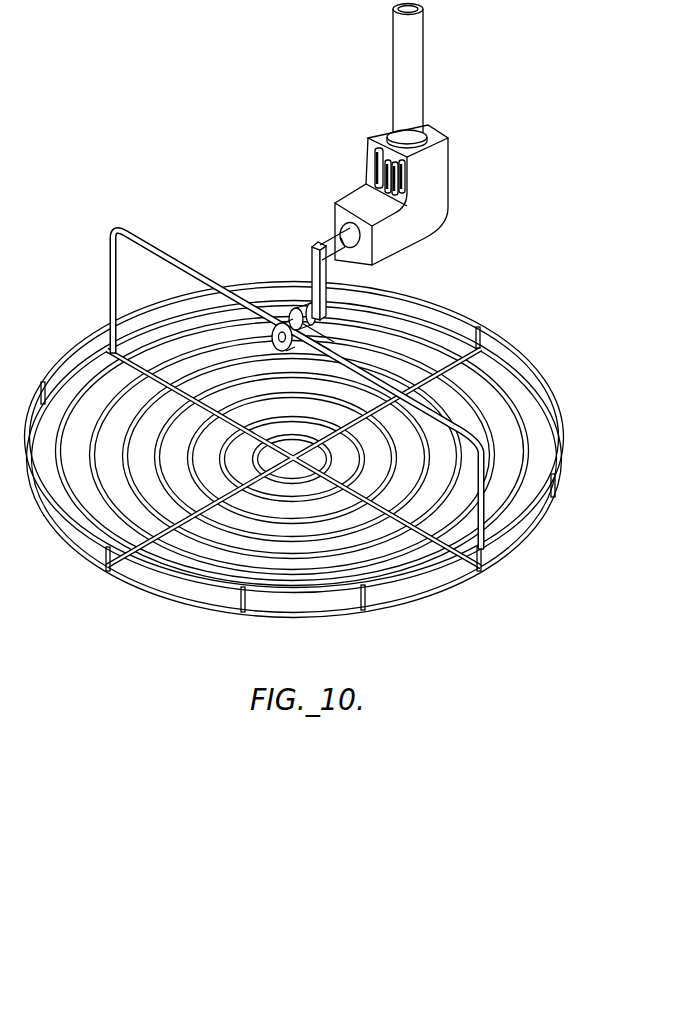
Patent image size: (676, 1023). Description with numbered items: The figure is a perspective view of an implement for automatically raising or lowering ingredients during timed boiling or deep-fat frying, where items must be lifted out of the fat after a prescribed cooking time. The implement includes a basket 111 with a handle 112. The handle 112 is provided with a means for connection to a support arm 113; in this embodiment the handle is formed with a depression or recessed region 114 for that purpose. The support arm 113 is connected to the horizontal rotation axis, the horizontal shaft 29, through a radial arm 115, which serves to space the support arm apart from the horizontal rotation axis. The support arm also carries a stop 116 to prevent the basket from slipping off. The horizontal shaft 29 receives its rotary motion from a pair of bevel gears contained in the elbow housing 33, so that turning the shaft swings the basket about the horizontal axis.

The basket 111 is at (560, 391).
The handle 112 is at (139, 227).
The support arm 113 is at (318, 333).
The recessed region 114 is at (281, 309).
The radial arm 115 is at (316, 268).
The stop 116 is at (277, 348).
The horizontal shaft 29 is at (333, 236).
The elbow housing 33 is at (450, 166).